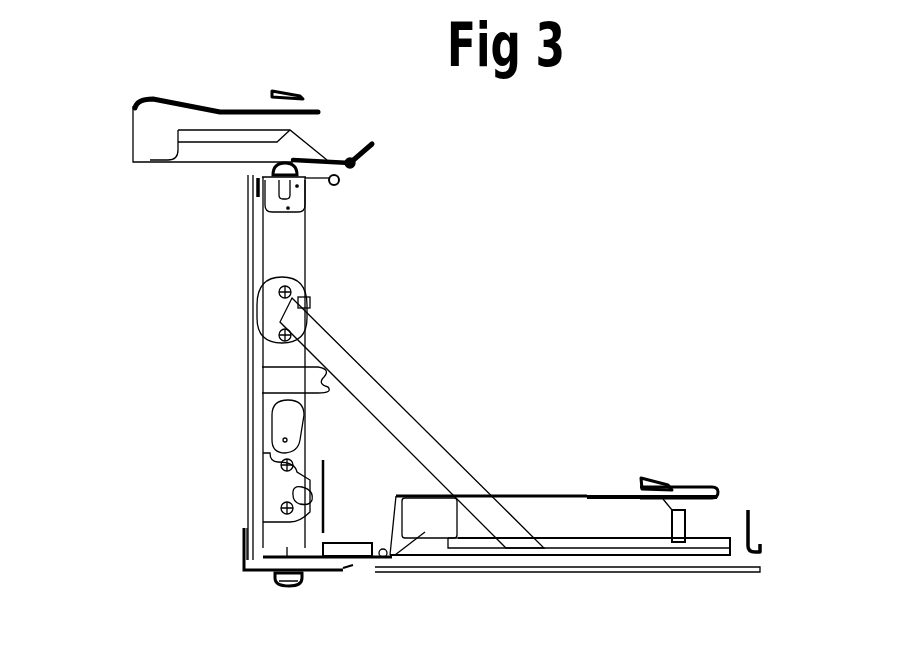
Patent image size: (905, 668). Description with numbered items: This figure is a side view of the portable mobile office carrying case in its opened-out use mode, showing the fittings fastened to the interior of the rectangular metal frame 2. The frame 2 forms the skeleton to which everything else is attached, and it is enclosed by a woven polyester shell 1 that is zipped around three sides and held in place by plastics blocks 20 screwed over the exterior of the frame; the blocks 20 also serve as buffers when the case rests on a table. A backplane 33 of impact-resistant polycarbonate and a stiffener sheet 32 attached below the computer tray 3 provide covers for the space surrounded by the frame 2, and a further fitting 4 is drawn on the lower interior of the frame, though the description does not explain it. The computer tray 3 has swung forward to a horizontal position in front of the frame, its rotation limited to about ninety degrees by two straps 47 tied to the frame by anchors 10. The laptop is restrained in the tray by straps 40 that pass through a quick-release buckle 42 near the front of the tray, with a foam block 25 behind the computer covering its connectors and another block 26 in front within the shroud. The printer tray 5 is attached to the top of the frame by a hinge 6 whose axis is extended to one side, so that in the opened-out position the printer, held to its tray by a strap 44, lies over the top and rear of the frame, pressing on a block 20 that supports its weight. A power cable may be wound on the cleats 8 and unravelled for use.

The shell 1 is at (240, 573).
The frame 2 is at (277, 355).
The computer tray 3 is at (590, 545).
The lower mounting plate 4 is at (259, 513).
The printer tray 5 is at (175, 128).
The hinge 6 is at (318, 178).
The cleats 8 is at (284, 417).
The anchors 10 is at (258, 287).
The blocks 20 is at (272, 584).
The block of foam 25 is at (428, 518).
The block 26 is at (687, 527).
The stiffener sheet 32 is at (662, 574).
The backplane 33 is at (246, 248).
The straps 40 is at (673, 488).
The quick-release buckle 42 is at (755, 513).
The strap 44 is at (254, 107).
The straps 47 is at (363, 365).